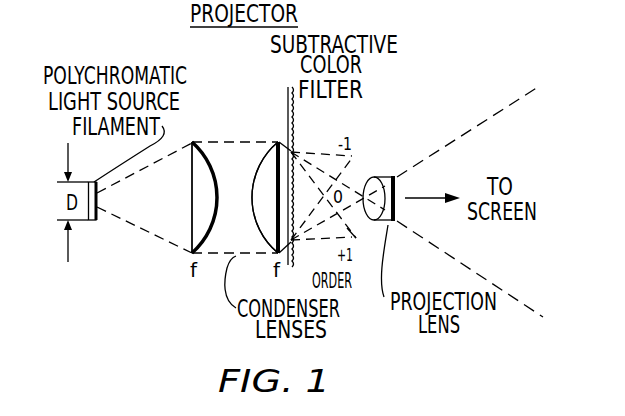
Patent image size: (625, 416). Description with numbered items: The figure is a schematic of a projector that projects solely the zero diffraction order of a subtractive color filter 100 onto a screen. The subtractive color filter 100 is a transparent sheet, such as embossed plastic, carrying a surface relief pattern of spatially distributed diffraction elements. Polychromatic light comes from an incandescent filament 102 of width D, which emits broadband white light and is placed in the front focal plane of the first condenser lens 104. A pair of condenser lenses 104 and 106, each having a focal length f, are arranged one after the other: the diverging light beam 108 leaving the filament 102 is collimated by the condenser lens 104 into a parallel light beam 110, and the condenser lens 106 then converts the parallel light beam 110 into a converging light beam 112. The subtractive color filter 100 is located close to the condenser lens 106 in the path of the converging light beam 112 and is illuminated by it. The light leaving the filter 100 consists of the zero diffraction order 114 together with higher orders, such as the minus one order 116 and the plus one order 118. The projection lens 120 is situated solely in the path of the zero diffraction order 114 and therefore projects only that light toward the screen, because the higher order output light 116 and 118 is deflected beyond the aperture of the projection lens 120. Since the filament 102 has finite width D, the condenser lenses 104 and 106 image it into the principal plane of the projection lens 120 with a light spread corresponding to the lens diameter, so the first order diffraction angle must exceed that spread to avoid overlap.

The subtractive color filter 100 is at (291, 108).
The incandescent filament 102 is at (90, 222).
The condenser lens 104 is at (196, 143).
The condenser lens 106 is at (252, 166).
The diverging light beam 108 is at (144, 227).
The parallel light beam 110 is at (220, 243).
The converging light beam 112 is at (281, 133).
The zero diffraction order 114 is at (348, 233).
The -1 order 116 is at (293, 151).
The +1 order 118 is at (329, 240).
The projection lens 120 is at (375, 177).